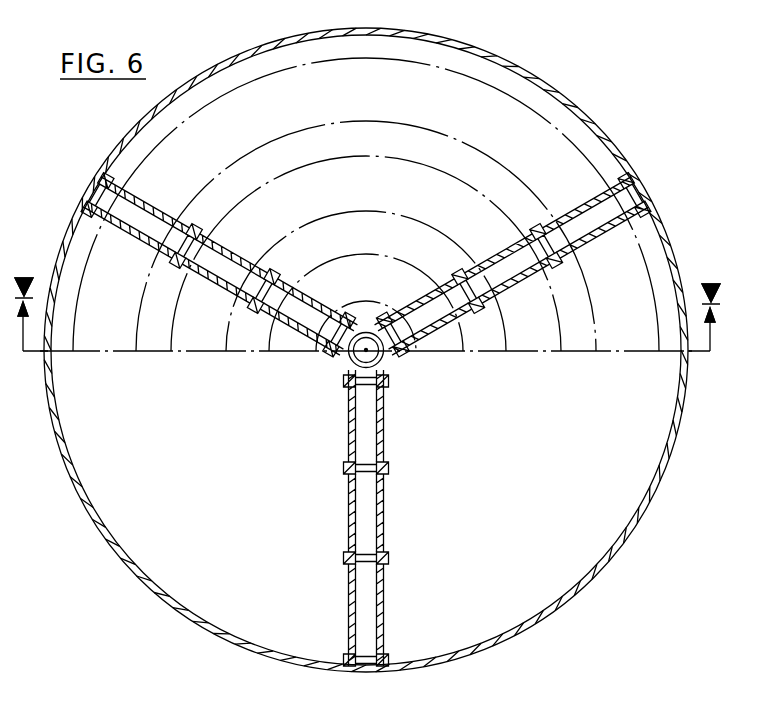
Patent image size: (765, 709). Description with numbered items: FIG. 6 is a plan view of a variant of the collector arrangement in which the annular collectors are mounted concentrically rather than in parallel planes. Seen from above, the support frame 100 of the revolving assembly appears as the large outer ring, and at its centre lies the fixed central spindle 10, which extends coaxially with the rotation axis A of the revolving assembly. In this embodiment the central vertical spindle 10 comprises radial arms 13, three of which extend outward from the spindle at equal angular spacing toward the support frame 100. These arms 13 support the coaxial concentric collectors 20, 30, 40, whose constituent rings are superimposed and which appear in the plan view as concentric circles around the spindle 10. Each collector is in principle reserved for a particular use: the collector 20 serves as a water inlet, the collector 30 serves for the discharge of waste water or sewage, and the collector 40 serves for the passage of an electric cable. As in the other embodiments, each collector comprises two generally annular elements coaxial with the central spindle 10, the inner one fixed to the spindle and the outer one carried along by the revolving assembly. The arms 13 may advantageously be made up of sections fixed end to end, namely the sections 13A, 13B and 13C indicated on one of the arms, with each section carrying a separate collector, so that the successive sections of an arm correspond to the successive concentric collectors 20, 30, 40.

The support frame 100 is at (590, 116).
The central spindle 10 is at (383, 372).
The radial arms 13 is at (399, 364).
The arm section 13A is at (413, 306).
The arm section 13B is at (491, 256).
The arm section 13C is at (588, 203).
The collector 20 is at (300, 197).
The collector 30 is at (453, 100).
The collector 40 is at (443, 338).
The rotation axis A is at (340, 366).